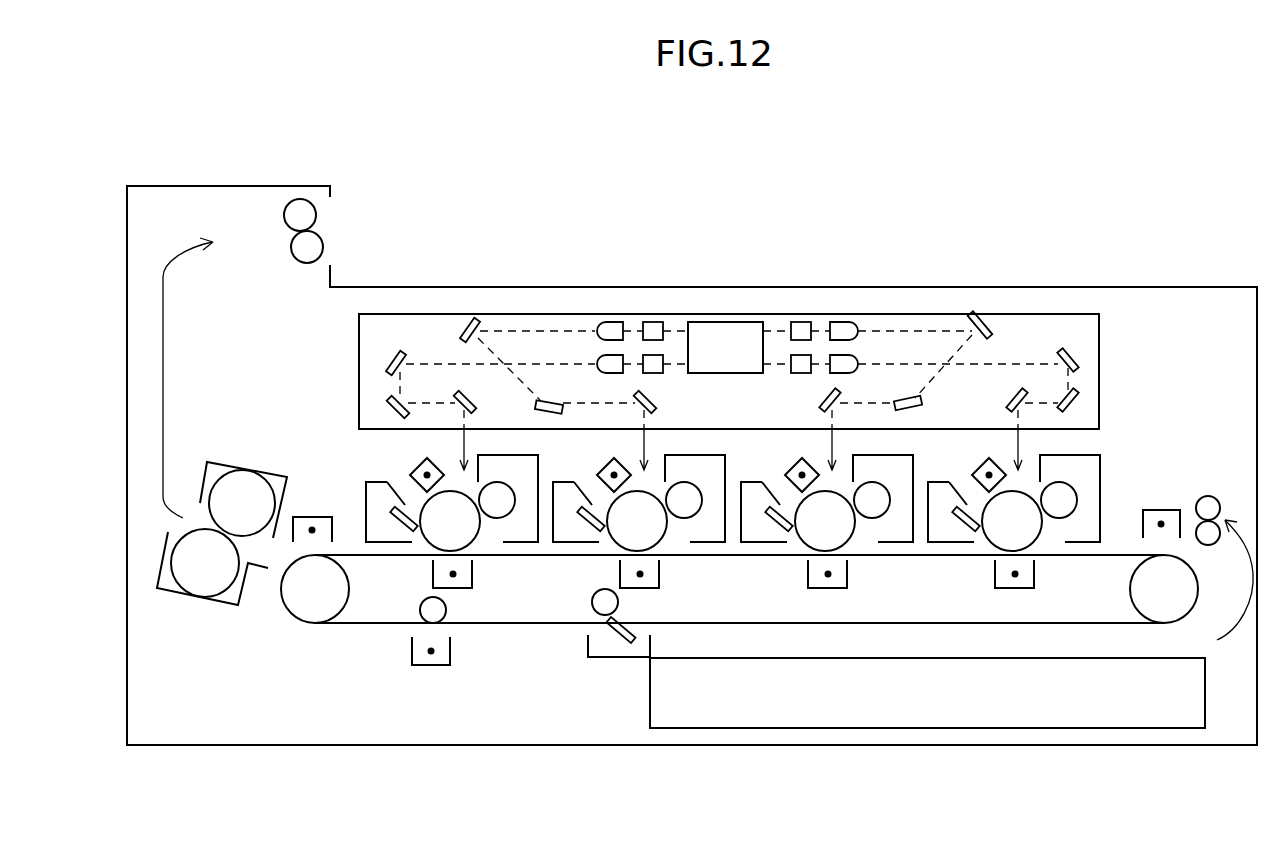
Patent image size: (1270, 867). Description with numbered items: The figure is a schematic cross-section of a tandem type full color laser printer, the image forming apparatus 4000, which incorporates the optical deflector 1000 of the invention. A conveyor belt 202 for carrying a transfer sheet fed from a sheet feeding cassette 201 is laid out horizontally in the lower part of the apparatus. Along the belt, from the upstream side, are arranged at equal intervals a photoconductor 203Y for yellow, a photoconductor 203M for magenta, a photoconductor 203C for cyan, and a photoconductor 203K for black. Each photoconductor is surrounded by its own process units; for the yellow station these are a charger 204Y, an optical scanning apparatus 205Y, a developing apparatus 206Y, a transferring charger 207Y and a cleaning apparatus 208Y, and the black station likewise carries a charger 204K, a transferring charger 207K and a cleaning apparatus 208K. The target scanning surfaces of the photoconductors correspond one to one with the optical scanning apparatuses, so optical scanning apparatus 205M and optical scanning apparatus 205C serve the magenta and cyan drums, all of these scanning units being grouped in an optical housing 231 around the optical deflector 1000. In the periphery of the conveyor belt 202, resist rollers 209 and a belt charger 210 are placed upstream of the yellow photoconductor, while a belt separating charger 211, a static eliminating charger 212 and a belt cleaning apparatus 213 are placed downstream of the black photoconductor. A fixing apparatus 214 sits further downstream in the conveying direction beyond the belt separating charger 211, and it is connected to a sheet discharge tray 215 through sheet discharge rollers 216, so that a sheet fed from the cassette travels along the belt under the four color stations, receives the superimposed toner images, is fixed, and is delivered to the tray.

The image forming apparatus 4000 is at (790, 165).
The sheet feeding cassette 201 is at (802, 745).
The conveyor belt 202 is at (582, 625).
The photoconductor for black 203K is at (480, 537).
The photoconductor for cyan 203C is at (667, 537).
The photoconductor for magenta 203M is at (852, 537).
The photoconductor for yellow 203Y is at (1032, 540).
The charger 204K is at (417, 460).
The charger 204Y is at (983, 455).
The optical scanning apparatus 205C is at (583, 328).
The optical scanning apparatus 205M is at (878, 328).
The optical scanning apparatus 205Y is at (400, 388).
The developing apparatus 206Y is at (1078, 455).
The transferring charger 207K is at (462, 590).
The transferring charger 207Y is at (1018, 590).
The cleaning apparatus 208K is at (378, 515).
The cleaning apparatus 208Y is at (958, 532).
The resist rollers 209 is at (1213, 492).
The belt charger 210 is at (1162, 508).
The belt separating charger 211 is at (322, 542).
The static eliminating charger 212 is at (430, 667).
The cleaning apparatus 213 is at (618, 650).
The fixing apparatus 214 is at (208, 583).
The sheet discharge tray 215 is at (533, 287).
The sheet discharge rollers 216 is at (316, 213).
The optical housing 231 is at (359, 397).
The optical deflector 1000 is at (718, 322).